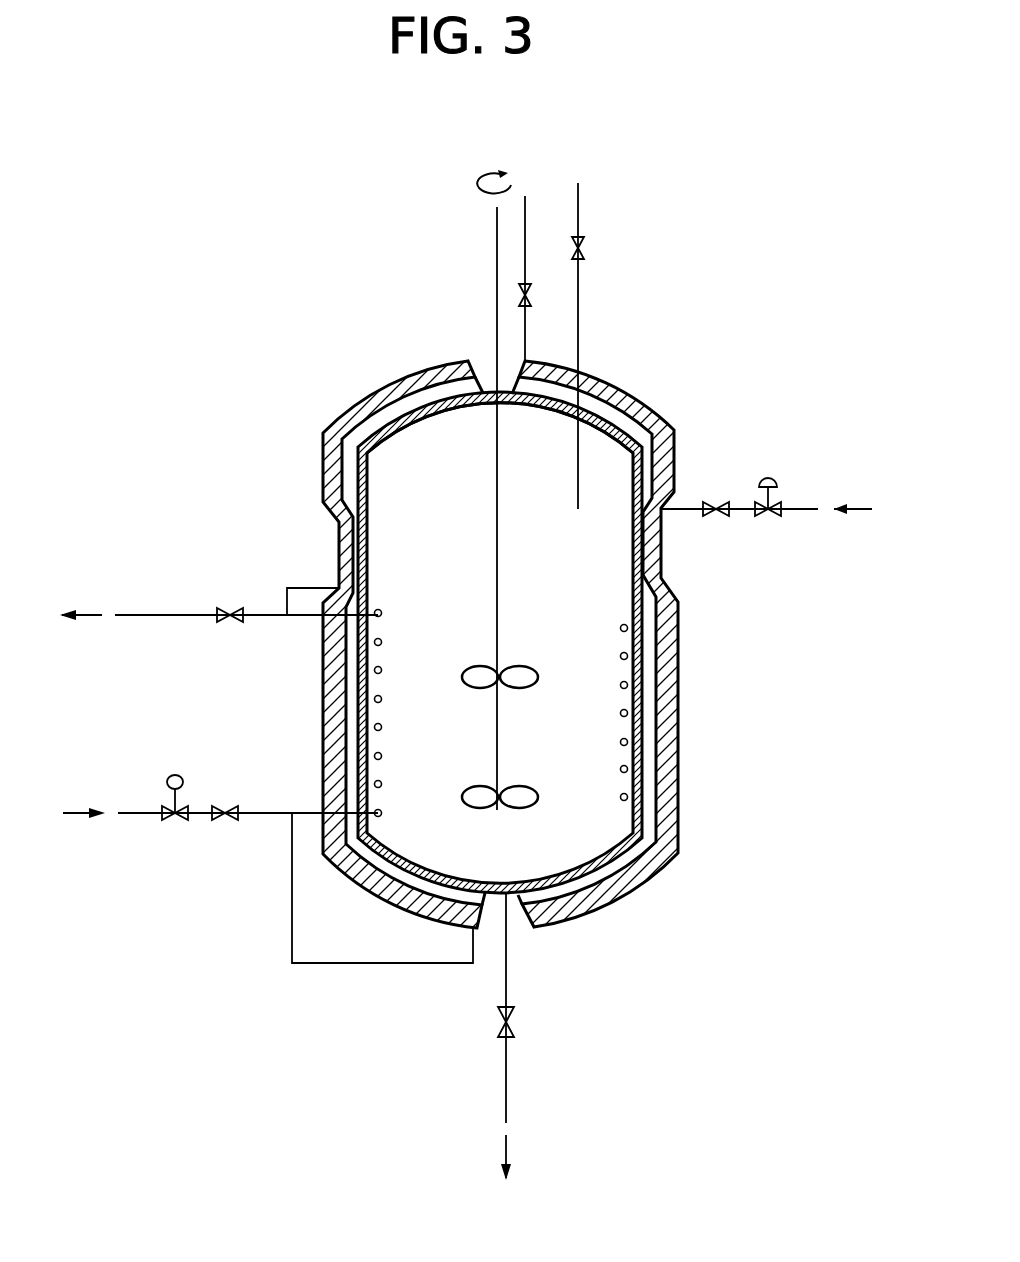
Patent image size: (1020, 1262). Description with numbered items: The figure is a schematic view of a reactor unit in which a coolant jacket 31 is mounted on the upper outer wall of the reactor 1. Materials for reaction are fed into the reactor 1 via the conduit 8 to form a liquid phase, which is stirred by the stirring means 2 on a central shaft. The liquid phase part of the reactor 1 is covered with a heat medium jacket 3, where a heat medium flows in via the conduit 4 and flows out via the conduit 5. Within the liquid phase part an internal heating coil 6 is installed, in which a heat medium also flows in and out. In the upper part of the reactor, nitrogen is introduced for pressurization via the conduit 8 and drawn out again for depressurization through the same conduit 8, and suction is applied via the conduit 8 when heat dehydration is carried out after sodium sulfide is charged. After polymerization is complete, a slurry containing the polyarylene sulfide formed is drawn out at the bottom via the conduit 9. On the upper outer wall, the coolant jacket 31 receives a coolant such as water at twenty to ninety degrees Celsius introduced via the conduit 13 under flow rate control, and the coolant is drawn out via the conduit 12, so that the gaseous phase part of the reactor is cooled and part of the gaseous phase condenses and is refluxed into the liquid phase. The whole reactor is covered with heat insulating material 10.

The reactor 1 is at (372, 545).
The stirring means 2 is at (533, 668).
The heat medium jacket 3 is at (650, 750).
The conduit 4 is at (140, 817).
The conduit 5 is at (148, 613).
The internal heating coil 6 is at (385, 782).
The conduit 8 is at (582, 210).
The conduit 9 is at (512, 1093).
The heat insulating material 10 is at (668, 682).
The conduit 12 is at (528, 332).
The conduit 13 is at (801, 504).
The coolant jacket 31 is at (612, 413).